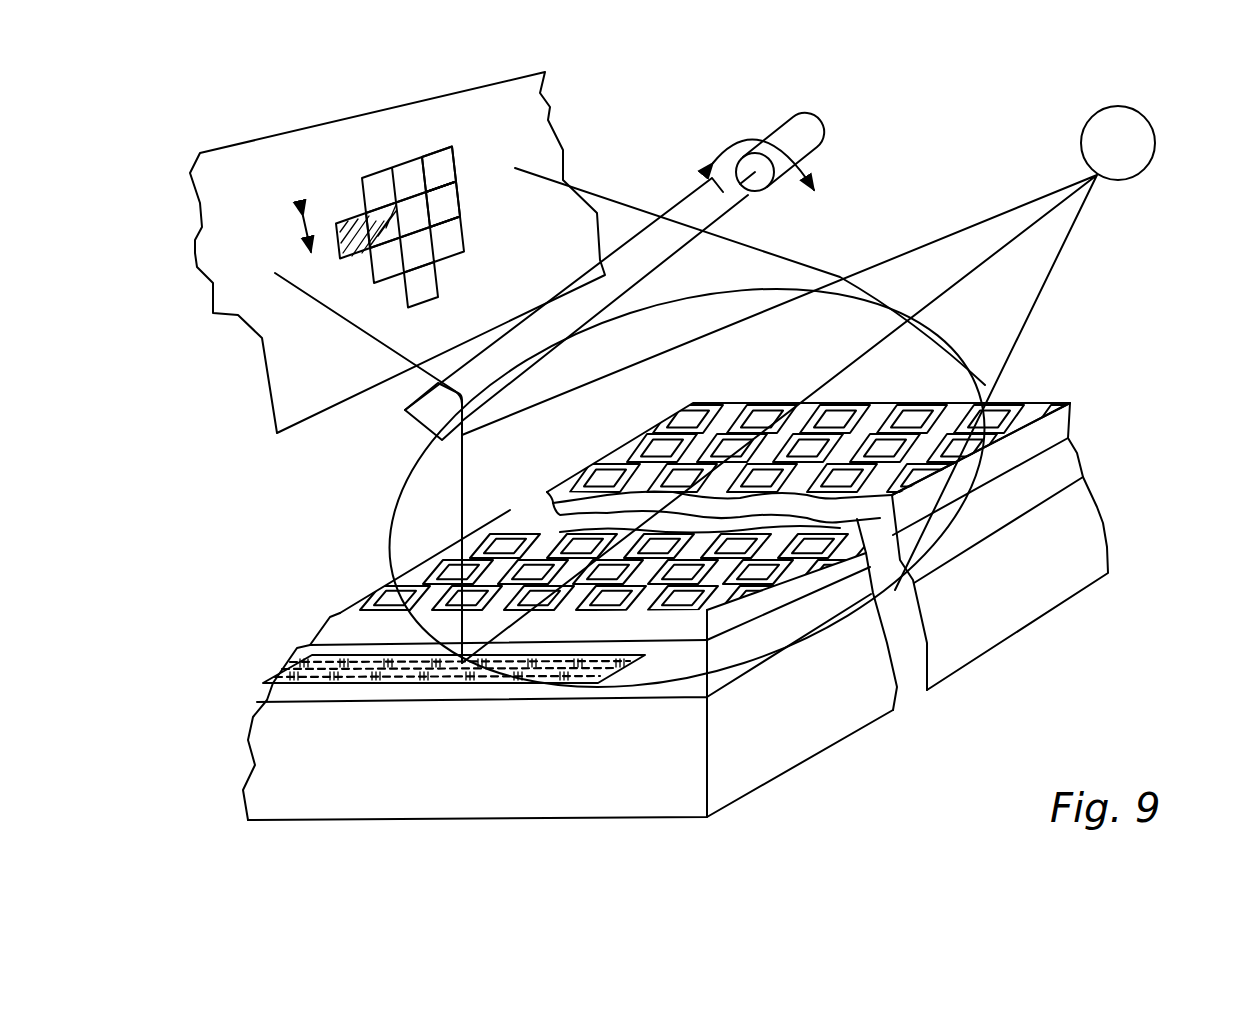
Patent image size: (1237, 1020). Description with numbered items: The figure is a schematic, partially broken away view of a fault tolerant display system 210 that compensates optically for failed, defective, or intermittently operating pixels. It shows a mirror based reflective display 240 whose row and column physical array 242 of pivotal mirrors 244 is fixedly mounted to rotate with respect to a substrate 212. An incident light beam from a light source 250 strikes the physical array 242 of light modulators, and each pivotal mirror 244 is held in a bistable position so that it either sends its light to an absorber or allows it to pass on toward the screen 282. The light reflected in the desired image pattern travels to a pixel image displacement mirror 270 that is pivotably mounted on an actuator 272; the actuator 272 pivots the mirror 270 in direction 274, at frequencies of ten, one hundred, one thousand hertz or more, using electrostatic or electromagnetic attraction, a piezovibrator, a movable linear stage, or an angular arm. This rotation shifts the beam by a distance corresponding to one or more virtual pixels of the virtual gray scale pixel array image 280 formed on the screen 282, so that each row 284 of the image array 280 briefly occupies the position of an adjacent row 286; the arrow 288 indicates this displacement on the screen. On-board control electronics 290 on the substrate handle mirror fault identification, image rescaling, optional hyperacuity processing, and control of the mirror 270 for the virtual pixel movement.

The fault tolerant display system 210 is at (978, 104).
The substrate 212 is at (1096, 526).
The mirror based reflective display 240 is at (1140, 383).
The physical array 242 is at (1046, 397).
The pivotal mirror 244 is at (389, 598).
The light source 250 is at (808, 384).
The pixel image displacement mirror 270 is at (703, 190).
The actuator 272 is at (807, 125).
The direction of mirror pivoting 274 is at (750, 132).
The virtual gray scale pixel array image 280 is at (459, 263).
The screen 282 is at (552, 102).
The row 284 is at (466, 200).
The adjacent row 286 is at (461, 157).
The direction of plate movement 288 is at (300, 240).
The on-board control electronics 290 is at (293, 663).